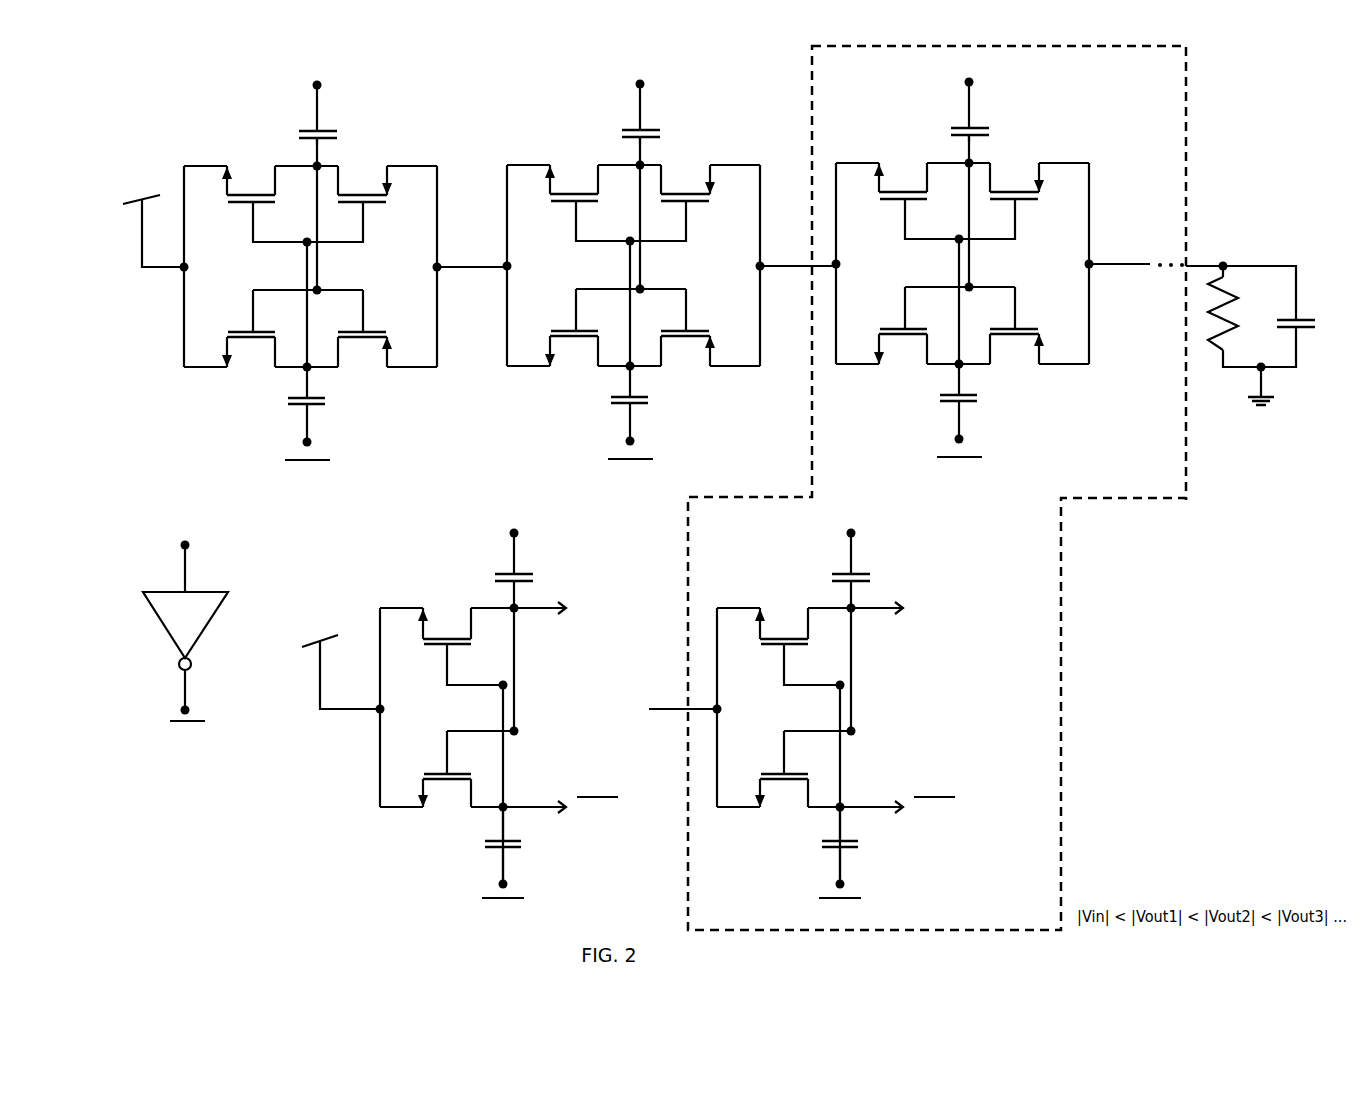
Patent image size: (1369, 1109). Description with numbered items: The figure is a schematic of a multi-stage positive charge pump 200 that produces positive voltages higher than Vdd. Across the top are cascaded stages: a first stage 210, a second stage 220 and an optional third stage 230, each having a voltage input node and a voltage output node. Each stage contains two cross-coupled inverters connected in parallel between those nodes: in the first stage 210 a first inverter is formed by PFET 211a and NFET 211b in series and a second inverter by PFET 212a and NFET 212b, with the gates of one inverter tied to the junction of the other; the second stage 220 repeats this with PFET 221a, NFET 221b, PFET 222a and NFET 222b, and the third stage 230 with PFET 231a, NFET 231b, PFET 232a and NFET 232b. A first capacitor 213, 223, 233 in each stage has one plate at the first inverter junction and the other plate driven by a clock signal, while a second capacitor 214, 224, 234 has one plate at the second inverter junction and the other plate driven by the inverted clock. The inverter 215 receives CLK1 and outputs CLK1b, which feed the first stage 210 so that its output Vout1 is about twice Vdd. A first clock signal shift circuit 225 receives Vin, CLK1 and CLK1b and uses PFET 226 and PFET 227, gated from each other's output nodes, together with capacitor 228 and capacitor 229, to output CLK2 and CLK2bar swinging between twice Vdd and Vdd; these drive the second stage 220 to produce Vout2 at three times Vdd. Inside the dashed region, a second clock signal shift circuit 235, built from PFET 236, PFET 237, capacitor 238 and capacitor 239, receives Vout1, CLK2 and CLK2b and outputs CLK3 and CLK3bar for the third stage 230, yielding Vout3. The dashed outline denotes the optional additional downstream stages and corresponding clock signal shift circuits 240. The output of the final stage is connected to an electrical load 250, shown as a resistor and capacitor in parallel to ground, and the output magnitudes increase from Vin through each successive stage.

The multi-stage positive charge pump 200 is at (172, 80).
The first stage 210 is at (400, 98).
The p-type field effect transistor of the first inverter 211a is at (234, 212).
The n-type field effect transistor of the first inverter 211b is at (392, 207).
The p-type field effect transistor of the second inverter 212a is at (227, 325).
The n-type field effect transistor of the second inverter 212b is at (393, 326).
The first capacitor 213 is at (290, 133).
The second capacitor 214 is at (286, 416).
The inverter 215 is at (232, 568).
The second stage 220 is at (670, 270).
The p-type field effect transistor of the first inverter 221a is at (561, 224).
The n-type field effect transistor of the first inverter 221b is at (708, 223).
The p-type field effect transistor of the second inverter 222a is at (559, 311).
The n-type field effect transistor of the second inverter 222b is at (706, 308).
The first capacitor 223 is at (611, 114).
The second capacitor 224 is at (613, 424).
The first clock signal shift circuit 225 is at (562, 538).
The PFET 226 is at (432, 659).
The PFET 227 is at (435, 758).
The capacitor 228 is at (491, 571).
The capacitor 229 is at (474, 841).
The third stage 230 is at (1008, 268).
The p-type field effect transistor of the first inverter 231a is at (890, 222).
The n-type field effect transistor of the first inverter 231b is at (1037, 221).
The p-type field effect transistor of the second inverter 232a is at (888, 309).
The n-type field effect transistor of the second inverter 232b is at (1035, 306).
The first capacitor 233 is at (940, 112).
The second capacitor 234 is at (942, 422).
The second clock signal shift circuit 235 is at (795, 709).
The PFET 236 is at (770, 668).
The PFET 237 is at (766, 753).
The capacitor 238 is at (826, 557).
The capacitor 239 is at (812, 845).
The additional downstream stages and corresponding clock signal shift circuits 240 is at (1187, 128).
The electrical load 250 is at (1282, 228).